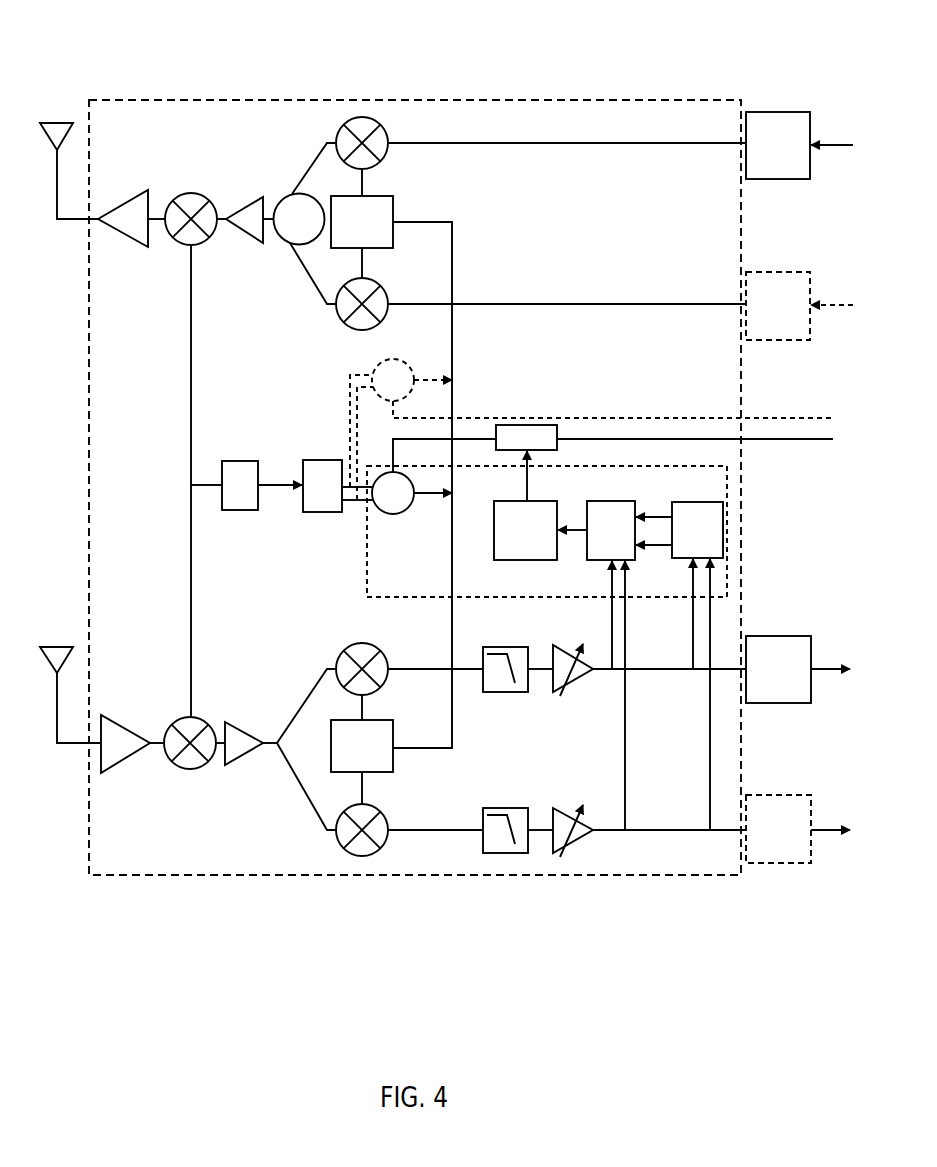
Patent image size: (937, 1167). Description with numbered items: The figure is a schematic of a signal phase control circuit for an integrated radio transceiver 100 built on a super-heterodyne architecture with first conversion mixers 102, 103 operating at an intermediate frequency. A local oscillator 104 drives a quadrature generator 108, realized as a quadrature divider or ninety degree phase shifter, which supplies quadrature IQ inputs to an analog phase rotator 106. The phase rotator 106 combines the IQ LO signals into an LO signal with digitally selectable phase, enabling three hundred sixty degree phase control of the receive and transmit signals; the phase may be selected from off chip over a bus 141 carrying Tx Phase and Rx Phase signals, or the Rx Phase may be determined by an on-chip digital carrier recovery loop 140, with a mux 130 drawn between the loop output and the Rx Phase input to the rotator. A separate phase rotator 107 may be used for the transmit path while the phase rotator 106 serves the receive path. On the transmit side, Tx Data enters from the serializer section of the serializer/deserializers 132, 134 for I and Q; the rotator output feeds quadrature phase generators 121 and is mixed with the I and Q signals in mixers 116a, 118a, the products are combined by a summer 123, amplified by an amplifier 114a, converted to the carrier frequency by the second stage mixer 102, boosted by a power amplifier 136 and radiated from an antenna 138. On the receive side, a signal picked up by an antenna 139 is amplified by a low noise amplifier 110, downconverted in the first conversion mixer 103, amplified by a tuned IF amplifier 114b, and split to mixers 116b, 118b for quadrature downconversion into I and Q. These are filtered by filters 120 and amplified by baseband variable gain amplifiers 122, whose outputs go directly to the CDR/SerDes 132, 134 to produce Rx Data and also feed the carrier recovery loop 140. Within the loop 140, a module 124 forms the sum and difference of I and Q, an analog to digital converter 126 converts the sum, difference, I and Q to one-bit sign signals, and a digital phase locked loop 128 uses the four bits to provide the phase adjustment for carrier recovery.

The radio transceiver 100 is at (166, 41).
The first conversion mixer 102 is at (183, 193).
The first conversion mixer 103 is at (197, 717).
The local oscillator 104 is at (227, 510).
The analog phase rotator 106 is at (408, 511).
The phase rotator 107 is at (378, 366).
The quadrature generator 108 is at (303, 500).
The low noise amplifier 110 is at (133, 757).
The amplifier 114a is at (247, 198).
The tuned IF amplifier 114b is at (247, 754).
The second conversion quadrature mixer 116a is at (380, 117).
The second conversion quadrature mixer 116b is at (341, 649).
The second conversion quadrature mixer 118a is at (374, 279).
The second conversion quadrature mixer 118b is at (339, 842).
The filter 120 is at (492, 692).
The quadrature phase generator 121 is at (375, 197).
The baseband variable gain amplifier 122 is at (577, 681).
The summer 123 is at (281, 241).
The sum and difference module 124 is at (710, 502).
The analog to digital converter 126 is at (587, 545).
The digital phase locked loop 128 is at (494, 514).
The multiplexer 130 is at (553, 452).
The serializer/deserializer 132 is at (800, 111).
The serializer/deserializer 134 is at (800, 271).
The power amplifier 136 is at (143, 193).
The antenna 138 is at (55, 193).
The antenna 139 is at (55, 717).
The digital carrier recovery loop 140 is at (437, 597).
The bus 141 is at (820, 418).